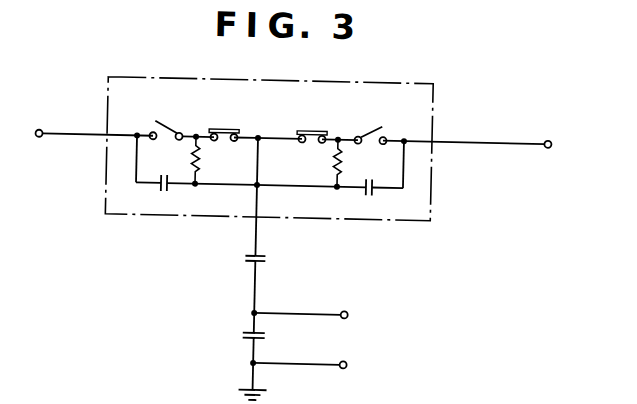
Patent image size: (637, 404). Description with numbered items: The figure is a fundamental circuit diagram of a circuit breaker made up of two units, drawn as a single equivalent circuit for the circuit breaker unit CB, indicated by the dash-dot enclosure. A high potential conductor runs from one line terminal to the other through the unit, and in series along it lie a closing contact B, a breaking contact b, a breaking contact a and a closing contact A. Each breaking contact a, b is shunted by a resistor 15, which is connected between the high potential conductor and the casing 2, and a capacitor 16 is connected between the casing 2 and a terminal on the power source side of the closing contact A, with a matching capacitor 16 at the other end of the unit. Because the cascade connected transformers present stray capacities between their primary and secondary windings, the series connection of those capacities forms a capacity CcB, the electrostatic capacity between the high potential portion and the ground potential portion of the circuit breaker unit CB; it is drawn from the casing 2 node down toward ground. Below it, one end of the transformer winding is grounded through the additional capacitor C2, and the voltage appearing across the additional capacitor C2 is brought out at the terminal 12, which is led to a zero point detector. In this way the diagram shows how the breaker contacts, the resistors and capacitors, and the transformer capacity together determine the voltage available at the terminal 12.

The casing 2 is at (260, 184).
The terminal 12 is at (358, 312).
The resistor 15 is at (200, 154).
The capacitor 16 is at (165, 196).
The circuit breaker unit CB is at (357, 78).
The capacity CcB is at (248, 255).
The additional capacitor C2 is at (247, 333).
The closing contact A is at (383, 119).
The closing contact B is at (180, 118).
The breaking contact a is at (312, 123).
The breaking contact b is at (224, 122).